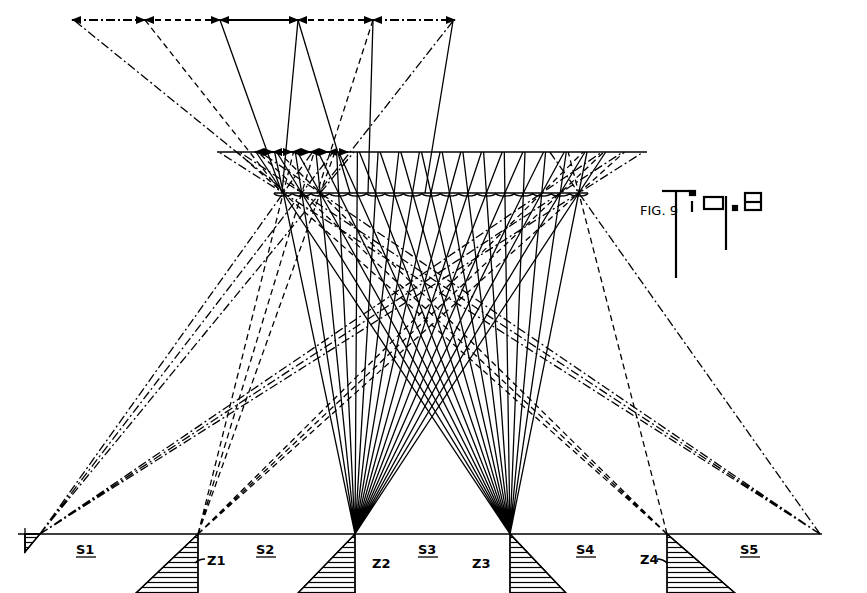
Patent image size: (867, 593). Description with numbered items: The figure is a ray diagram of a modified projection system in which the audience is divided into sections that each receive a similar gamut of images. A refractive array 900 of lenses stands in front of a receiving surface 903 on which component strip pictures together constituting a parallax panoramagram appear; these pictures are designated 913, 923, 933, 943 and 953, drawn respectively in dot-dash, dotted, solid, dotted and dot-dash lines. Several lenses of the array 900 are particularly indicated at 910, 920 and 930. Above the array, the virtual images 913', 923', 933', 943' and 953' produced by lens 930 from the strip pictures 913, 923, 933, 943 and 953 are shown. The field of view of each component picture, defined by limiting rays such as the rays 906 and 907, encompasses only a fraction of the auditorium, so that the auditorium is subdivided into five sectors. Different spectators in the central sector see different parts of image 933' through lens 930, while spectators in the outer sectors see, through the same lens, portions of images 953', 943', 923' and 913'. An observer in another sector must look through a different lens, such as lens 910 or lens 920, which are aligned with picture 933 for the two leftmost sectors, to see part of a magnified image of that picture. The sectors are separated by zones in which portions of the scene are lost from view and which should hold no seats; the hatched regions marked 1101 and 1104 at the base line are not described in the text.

The refractive array 900 is at (484, 188).
The receiving surface 903 is at (468, 151).
The limiting ray 906 is at (240, 73).
The limiting ray 907 is at (318, 86).
The lens 910 is at (279, 194).
The lens 920 is at (300, 196).
The lens 930 is at (319, 195).
The component picture 913 is at (234, 140).
The component picture 923 is at (264, 125).
The component picture 933 is at (294, 131).
The component picture 943 is at (323, 132).
The component picture 953 is at (348, 135).
The virtual image 913' is at (108, 33).
The virtual image 923' is at (182, 33).
The virtual image 933' is at (259, 36).
The virtual image 943' is at (335, 36).
The virtual image 953' is at (414, 33).
The light source zone 1101 is at (595, 580).
The light source zone 1104 is at (660, 577).